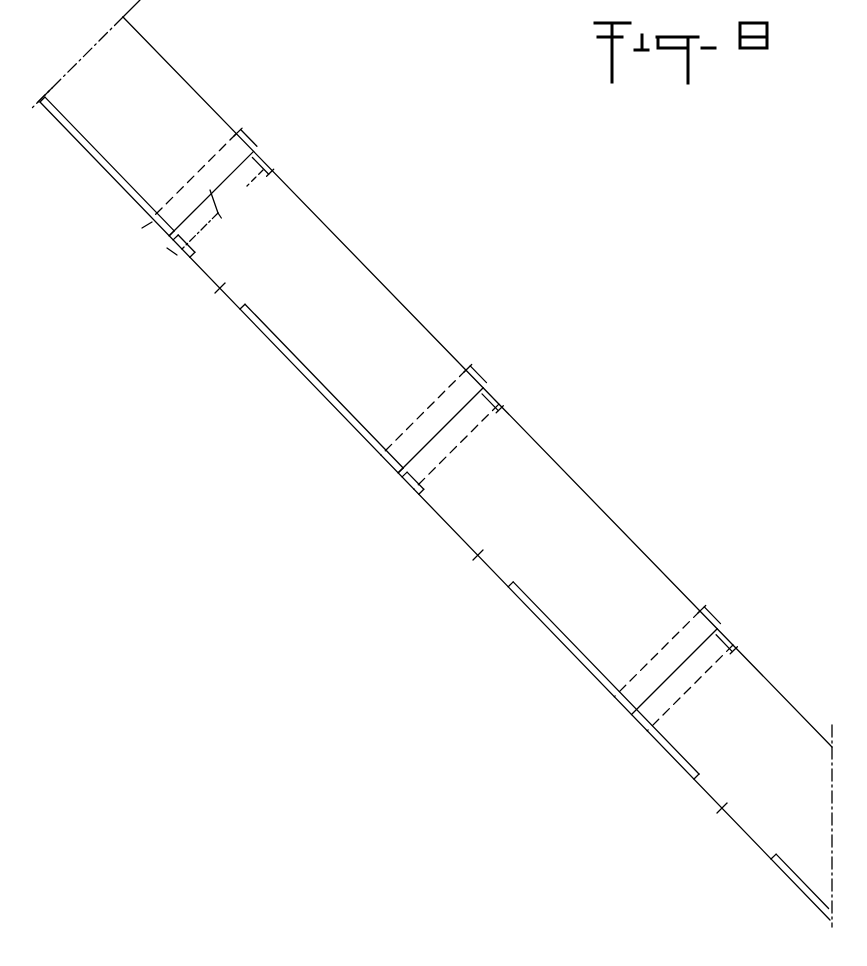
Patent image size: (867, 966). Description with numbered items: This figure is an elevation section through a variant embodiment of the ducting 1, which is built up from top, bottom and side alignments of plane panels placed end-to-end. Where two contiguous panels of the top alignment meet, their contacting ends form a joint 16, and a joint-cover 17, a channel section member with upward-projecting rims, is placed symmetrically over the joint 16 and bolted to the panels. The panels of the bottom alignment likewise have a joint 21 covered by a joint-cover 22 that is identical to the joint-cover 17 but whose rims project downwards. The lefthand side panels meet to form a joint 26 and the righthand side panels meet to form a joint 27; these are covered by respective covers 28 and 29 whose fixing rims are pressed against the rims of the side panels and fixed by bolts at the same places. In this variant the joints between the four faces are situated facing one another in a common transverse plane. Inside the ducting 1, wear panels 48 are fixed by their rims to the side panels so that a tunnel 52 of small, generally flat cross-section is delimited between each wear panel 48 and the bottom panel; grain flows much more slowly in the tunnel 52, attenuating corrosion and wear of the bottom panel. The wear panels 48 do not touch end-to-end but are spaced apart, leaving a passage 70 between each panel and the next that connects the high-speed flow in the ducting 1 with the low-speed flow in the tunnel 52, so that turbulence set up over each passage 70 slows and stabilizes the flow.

The ducting 1 is at (562, 450).
The wear panel 48 is at (78, 132).
The tunnel 52 is at (91, 155).
The joint-cover 17 is at (247, 134).
The joint 16 is at (258, 152).
The joint 21 is at (150, 230).
The joint-cover 22 is at (170, 256).
The joint 26 is at (213, 190).
The joint 27 is at (220, 218).
The cover 28 is at (247, 187).
The cover 29 is at (198, 232).
The passage 70 is at (220, 287).